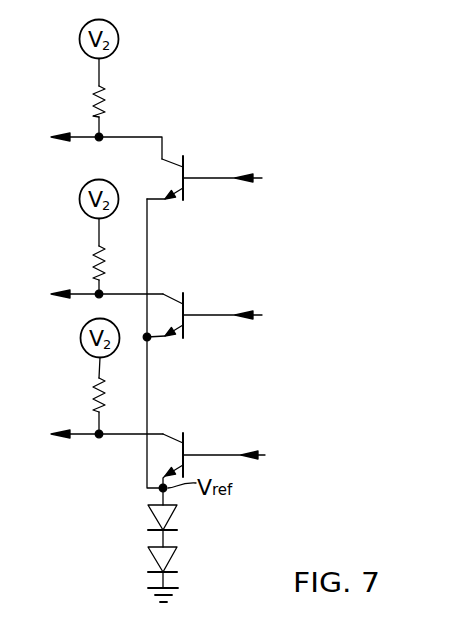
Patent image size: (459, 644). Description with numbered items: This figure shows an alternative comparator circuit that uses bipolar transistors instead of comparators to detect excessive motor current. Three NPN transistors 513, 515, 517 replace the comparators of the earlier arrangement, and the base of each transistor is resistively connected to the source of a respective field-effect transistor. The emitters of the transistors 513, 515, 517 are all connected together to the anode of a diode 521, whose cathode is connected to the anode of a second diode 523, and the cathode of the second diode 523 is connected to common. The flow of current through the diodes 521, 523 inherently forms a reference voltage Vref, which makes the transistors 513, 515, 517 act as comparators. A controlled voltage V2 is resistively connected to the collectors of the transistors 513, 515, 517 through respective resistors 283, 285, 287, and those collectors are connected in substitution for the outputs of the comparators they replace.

The resistor 283 is at (92, 100).
The resistor 285 is at (92, 256).
The resistor 287 is at (92, 393).
The NPN transistor 513 is at (177, 157).
The NPN transistor 515 is at (174, 293).
The NPN transistor 517 is at (179, 433).
The diode 521 is at (175, 518).
The second diode 523 is at (177, 563).